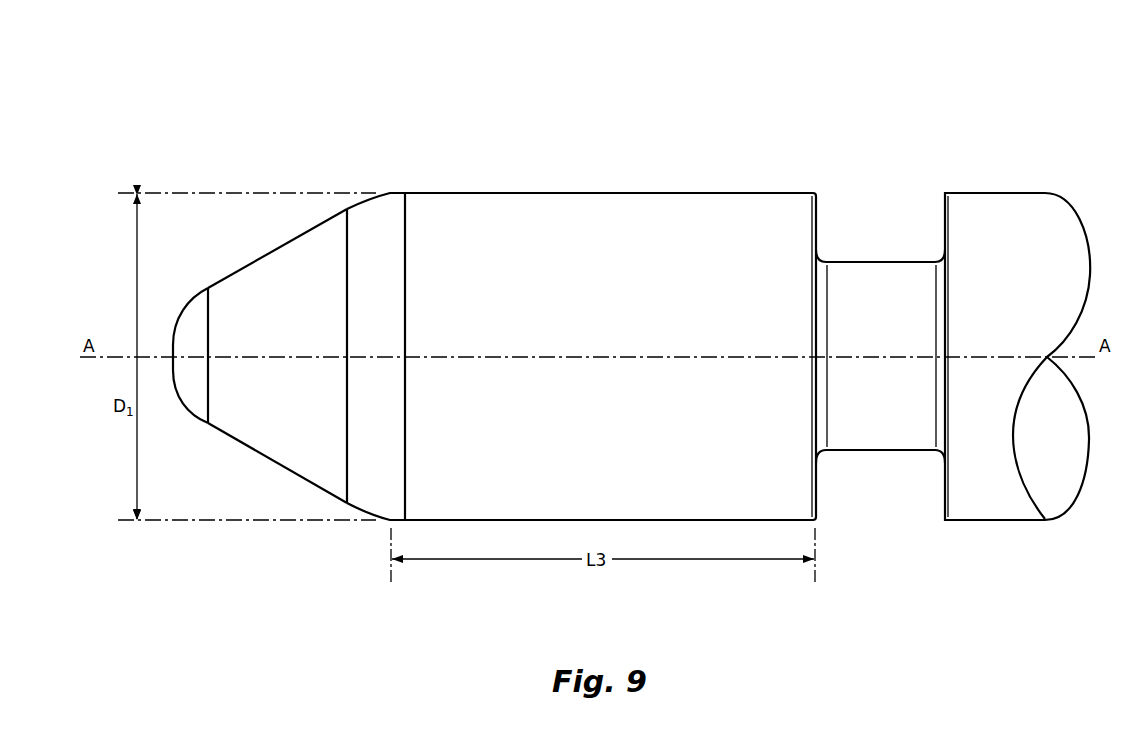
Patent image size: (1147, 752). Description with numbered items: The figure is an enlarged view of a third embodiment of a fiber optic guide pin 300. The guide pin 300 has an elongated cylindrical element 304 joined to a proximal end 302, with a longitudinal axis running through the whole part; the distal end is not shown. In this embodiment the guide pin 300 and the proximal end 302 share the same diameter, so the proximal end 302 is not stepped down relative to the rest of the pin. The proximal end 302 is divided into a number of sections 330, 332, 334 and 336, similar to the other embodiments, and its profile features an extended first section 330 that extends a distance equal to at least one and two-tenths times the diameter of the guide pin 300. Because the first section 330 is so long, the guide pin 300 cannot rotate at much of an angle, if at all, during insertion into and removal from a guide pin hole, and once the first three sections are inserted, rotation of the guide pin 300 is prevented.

The guide pin 300 is at (898, 148).
The proximal end 302 is at (578, 148).
The elongated cylindrical element 304 is at (1026, 193).
The first section 330 is at (759, 192).
The second section 332 is at (383, 207).
The third section 334 is at (265, 267).
The fourth section 336 is at (190, 398).